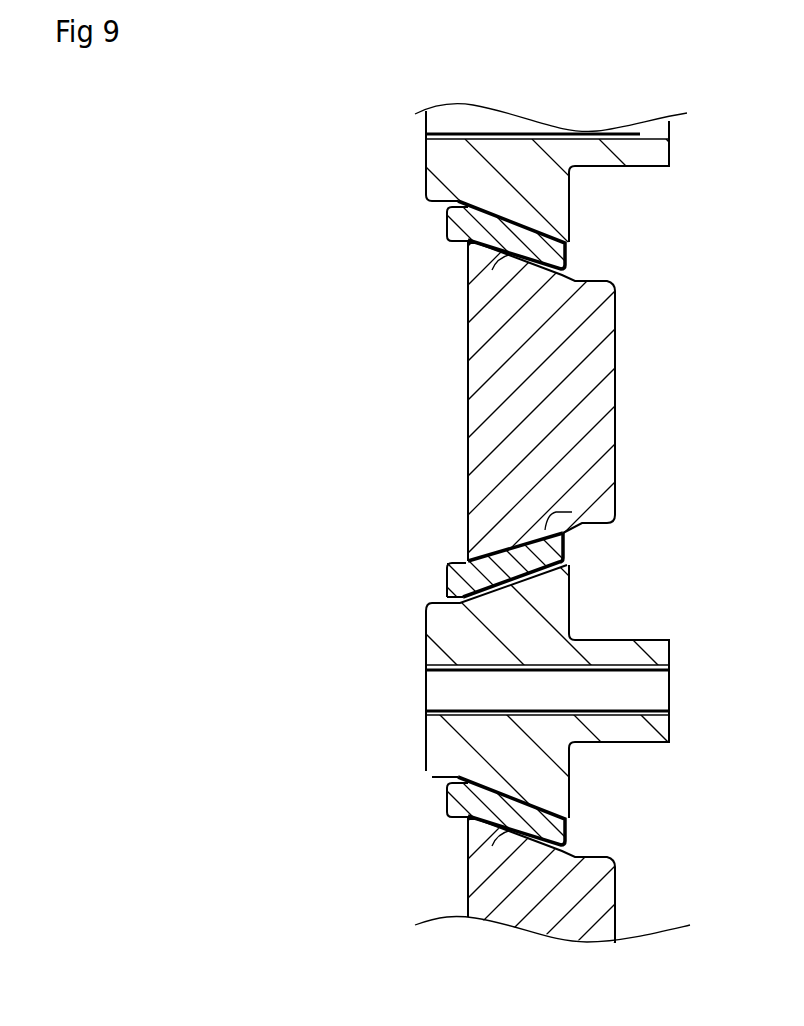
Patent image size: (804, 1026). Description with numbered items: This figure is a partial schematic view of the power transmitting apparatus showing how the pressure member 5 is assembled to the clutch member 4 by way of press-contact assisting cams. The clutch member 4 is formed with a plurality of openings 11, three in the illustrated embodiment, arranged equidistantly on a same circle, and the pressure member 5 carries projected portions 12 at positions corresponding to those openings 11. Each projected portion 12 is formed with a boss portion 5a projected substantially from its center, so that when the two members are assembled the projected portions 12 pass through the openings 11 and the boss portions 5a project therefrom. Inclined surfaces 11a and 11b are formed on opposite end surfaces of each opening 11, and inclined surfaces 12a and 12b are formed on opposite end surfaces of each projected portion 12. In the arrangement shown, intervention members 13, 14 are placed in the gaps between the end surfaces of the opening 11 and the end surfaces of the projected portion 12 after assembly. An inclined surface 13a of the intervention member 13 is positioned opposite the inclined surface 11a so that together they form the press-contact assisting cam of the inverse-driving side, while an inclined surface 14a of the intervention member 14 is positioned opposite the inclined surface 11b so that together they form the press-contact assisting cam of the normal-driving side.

The clutch member 4 is at (603, 388).
The pressure member 5 is at (433, 170).
The boss portion 5a is at (660, 153).
The opening 11 is at (622, 623).
The inclined surface 11a is at (525, 550).
The inclined surface 11b is at (567, 257).
The projected portion 12 is at (570, 187).
The inclined surface 12a is at (478, 580).
The inclined surface 12b is at (450, 207).
The intervention member 13 is at (565, 548).
The inclined surface 13a is at (578, 510).
The intervention member 14 is at (447, 230).
The inclined surface 14a is at (497, 282).